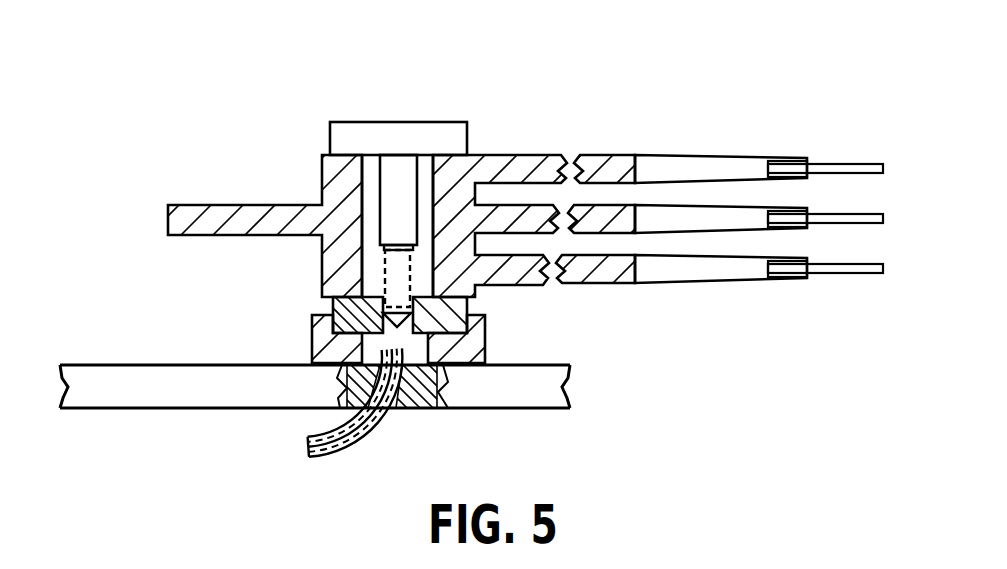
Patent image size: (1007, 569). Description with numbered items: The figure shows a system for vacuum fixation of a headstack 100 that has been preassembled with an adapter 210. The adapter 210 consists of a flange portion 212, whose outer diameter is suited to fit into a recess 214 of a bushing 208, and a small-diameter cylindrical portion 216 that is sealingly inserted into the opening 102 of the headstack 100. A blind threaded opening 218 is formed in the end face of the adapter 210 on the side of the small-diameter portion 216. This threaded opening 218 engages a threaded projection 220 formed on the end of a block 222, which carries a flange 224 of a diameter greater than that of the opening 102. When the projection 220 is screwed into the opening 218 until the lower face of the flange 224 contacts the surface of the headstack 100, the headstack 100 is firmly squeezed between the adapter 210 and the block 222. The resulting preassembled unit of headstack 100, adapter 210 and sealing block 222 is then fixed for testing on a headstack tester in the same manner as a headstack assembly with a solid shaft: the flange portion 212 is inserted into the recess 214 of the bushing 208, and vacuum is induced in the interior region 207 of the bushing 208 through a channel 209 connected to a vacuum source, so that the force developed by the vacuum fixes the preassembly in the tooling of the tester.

The headstack 100 is at (788, 122).
The opening 102 is at (366, 192).
The interior region 207 is at (415, 375).
The bushing 208 is at (502, 341).
The channel 209 is at (355, 447).
The adapter 210 is at (330, 366).
The flange portion 212 is at (333, 302).
The recess 214 is at (468, 300).
The small-diameter cylindrical portion 216 is at (424, 270).
The blind threaded opening 218 is at (392, 290).
The threaded projection 220 is at (397, 263).
The block 222 is at (412, 85).
The flange 224 is at (330, 150).